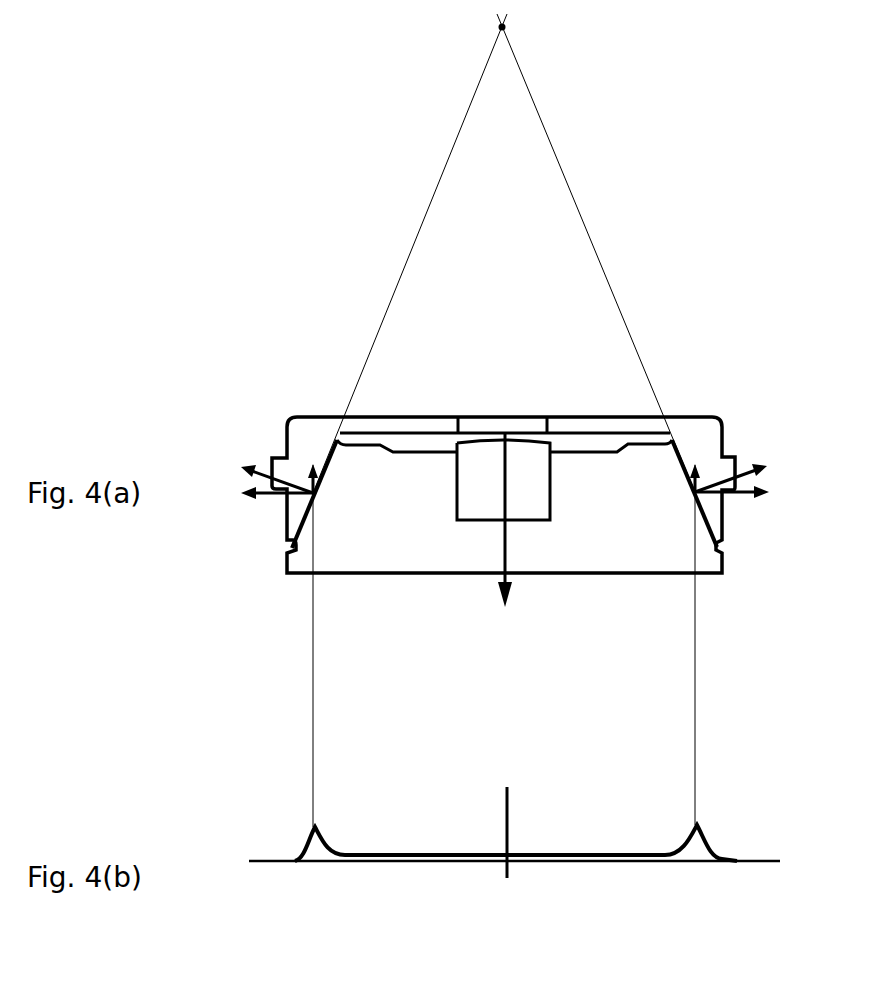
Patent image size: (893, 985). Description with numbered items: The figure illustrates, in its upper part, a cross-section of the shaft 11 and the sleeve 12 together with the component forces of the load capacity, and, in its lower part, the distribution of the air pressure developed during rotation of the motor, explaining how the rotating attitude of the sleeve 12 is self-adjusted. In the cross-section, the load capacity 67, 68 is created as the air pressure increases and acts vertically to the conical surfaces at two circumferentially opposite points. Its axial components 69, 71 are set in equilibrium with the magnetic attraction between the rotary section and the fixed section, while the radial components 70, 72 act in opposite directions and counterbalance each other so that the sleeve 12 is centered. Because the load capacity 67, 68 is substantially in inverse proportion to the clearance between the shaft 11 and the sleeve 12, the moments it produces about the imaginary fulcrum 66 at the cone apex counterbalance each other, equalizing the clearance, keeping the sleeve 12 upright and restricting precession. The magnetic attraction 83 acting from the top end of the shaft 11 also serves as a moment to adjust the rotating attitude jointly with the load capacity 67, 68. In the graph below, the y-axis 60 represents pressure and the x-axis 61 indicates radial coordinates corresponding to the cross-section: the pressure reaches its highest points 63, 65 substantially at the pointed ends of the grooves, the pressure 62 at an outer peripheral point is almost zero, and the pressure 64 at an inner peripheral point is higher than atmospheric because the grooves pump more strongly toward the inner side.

In FIG. 4A, the imaginary fulcrum 66 is at (502, 27).
In FIG. 4A, the sleeve 12 is at (689, 432).
In FIG. 4A, the shaft 11 is at (643, 490).
In FIG. 4A, the magnetic attraction 83 is at (505, 607).
In FIG. 4A, the load capacity 67 is at (242, 467).
In FIG. 4A, the axial component 69 is at (313, 465).
In FIG. 4A, the radial component 70 is at (252, 494).
In FIG. 4A, the load capacity 68 is at (767, 463).
In FIG. 4A, the axial component 71 is at (693, 465).
In FIG. 4A, the radial component 72 is at (767, 493).
In FIG. 4B, the x-axis 61 is at (762, 862).
In FIG. 4B, the pressure at inner peripheral point 64 is at (562, 862).
In FIG. 4B, the pressure at outer peripheral point 62 is at (290, 862).
In FIG. 4B, the highest pressure point 63 is at (318, 845).
In FIG. 4B, the highest pressure point 65 is at (685, 855).
In FIG. 4B, the y-axis 60 is at (503, 807).